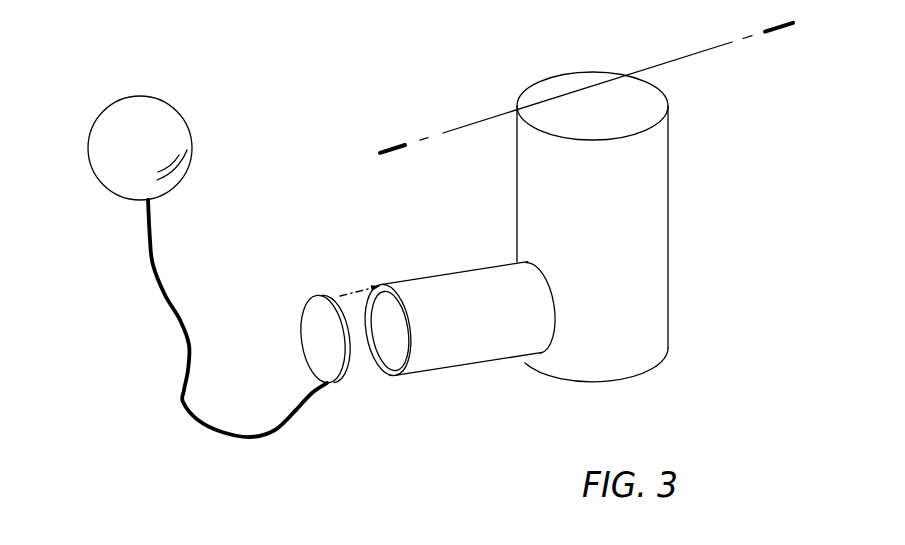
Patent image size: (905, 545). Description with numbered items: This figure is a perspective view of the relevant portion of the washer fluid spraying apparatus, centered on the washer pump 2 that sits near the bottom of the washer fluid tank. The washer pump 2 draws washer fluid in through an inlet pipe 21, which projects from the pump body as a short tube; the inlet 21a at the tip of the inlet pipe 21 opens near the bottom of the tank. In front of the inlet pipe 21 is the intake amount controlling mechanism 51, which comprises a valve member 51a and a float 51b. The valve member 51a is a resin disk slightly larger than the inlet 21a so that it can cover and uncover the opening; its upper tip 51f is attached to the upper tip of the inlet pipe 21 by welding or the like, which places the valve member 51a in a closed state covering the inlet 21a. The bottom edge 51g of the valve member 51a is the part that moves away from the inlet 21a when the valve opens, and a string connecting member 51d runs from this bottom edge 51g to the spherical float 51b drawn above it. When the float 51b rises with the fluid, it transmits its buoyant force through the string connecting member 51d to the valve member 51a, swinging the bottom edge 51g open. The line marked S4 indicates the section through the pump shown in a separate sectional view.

The washer pump 2 is at (680, 233).
The inlet pipe 21 is at (452, 354).
The inlet 21a is at (388, 352).
The intake amount controlling mechanism 51 is at (230, 215).
The valve member 51a is at (317, 345).
The float 51b is at (160, 105).
The string connecting member 51d is at (155, 278).
The upper tip of the valve member 51f is at (312, 305).
The bottom edge of the valve member 51g is at (318, 390).
The section line S4 is at (403, 158).